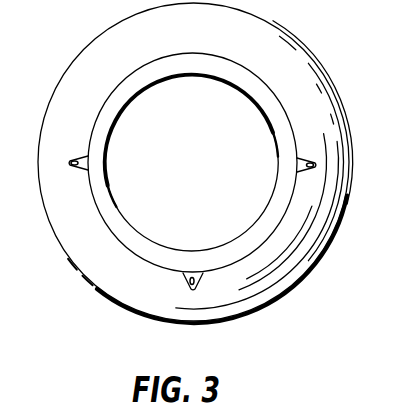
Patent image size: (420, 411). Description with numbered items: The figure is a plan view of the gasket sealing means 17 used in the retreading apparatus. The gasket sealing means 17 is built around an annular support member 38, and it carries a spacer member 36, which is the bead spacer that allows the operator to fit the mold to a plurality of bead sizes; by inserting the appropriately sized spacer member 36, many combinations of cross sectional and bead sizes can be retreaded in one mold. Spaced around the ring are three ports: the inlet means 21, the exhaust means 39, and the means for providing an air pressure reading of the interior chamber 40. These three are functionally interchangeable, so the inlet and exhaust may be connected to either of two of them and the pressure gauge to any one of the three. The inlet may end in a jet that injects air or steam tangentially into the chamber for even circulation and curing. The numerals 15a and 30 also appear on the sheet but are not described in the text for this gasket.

The gasket sealing means 17 is at (297, 78).
The annular support member 38 is at (275, 206).
The spacer member 36 is at (310, 245).
The exhaust means 39 is at (89, 164).
The means for providing an air pressure reading 40 is at (296, 166).
The inlet means 21 is at (196, 275).
The adjacent figure label 15a is at (353, 405).
The adjacent figure label 30 is at (393, 401).